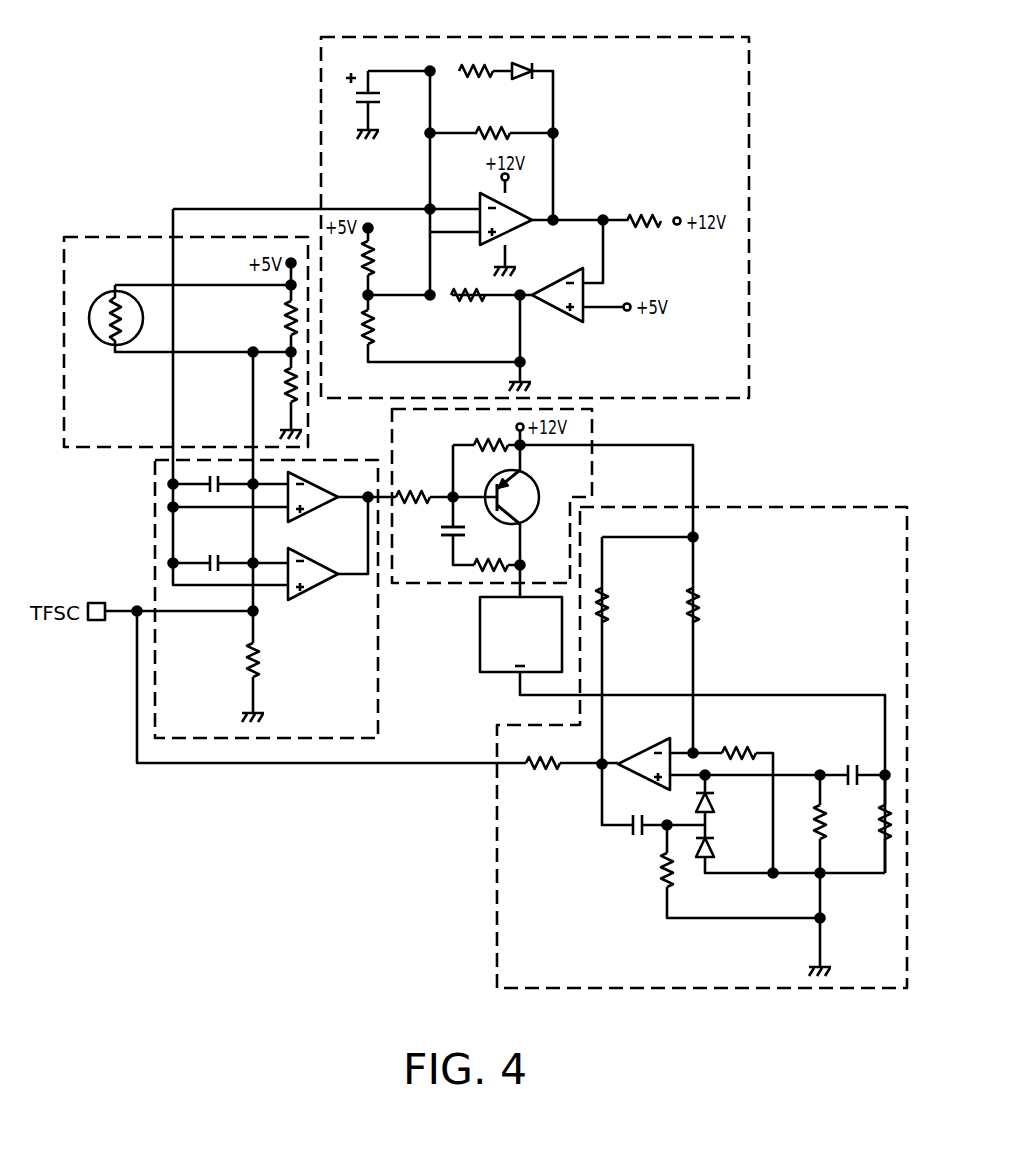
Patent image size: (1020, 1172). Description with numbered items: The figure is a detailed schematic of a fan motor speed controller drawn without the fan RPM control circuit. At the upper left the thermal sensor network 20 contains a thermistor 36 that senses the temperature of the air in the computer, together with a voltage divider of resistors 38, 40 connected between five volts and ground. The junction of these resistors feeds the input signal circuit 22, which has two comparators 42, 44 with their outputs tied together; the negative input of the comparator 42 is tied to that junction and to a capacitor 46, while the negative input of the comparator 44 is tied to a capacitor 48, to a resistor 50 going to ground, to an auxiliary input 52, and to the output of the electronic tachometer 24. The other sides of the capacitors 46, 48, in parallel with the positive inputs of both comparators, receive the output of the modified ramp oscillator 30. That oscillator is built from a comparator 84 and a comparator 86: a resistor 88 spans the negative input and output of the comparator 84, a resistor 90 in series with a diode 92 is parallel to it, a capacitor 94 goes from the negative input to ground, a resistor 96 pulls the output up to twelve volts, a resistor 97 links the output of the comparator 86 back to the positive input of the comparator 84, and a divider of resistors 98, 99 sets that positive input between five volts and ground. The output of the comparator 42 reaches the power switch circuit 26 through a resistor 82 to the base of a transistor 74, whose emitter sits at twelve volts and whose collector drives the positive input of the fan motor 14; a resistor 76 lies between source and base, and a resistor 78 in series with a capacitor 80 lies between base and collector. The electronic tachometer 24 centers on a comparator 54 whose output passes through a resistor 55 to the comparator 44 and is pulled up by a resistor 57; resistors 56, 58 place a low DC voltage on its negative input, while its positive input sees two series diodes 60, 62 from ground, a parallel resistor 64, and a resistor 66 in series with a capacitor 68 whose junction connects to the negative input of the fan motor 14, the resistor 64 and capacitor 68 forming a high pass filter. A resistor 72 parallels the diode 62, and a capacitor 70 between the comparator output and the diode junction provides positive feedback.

The fan motor 14 is at (480, 634).
The thermal sensor network 20 is at (100, 236).
The input signal circuit 22 is at (155, 517).
The electronic tachometer 24 is at (806, 507).
The power switch circuit 26 is at (592, 428).
The ramp oscillator 30 is at (749, 222).
The thermistor 36 is at (108, 342).
The resistor 38 is at (282, 319).
The resistor 40 is at (284, 390).
The comparator 42 is at (322, 478).
The comparator 44 is at (322, 554).
The capacitor 46 is at (207, 470).
The capacitor 48 is at (206, 554).
The resistor 50 is at (262, 660).
The auxiliary input 52 is at (97, 621).
The comparator 54 is at (642, 746).
The resistor 55 is at (548, 762).
The resistor 56 is at (701, 605).
The resistor 57 is at (610, 605).
The resistor 58 is at (742, 745).
The diode 60 is at (714, 801).
The diode 62 is at (714, 846).
The resistor 64 is at (812, 830).
The resistor 66 is at (878, 830).
The capacitor 68 is at (849, 766).
The capacitor 70 is at (626, 835).
The resistor 72 is at (659, 876).
The transistor 74 is at (533, 478).
The resistor 76 is at (481, 439).
The resistor 78 is at (486, 559).
The capacitor 80 is at (441, 530).
The resistor 82 is at (415, 490).
The comparator 84 is at (544, 194).
The comparator 86 is at (562, 314).
The resistor 88 is at (488, 126).
The resistor 90 is at (460, 64).
The diode 92 is at (533, 63).
The capacitor 94 is at (378, 108).
The resistor 96 is at (642, 212).
The resistor 97 is at (472, 302).
The resistor 98 is at (377, 325).
The resistor 99 is at (377, 256).